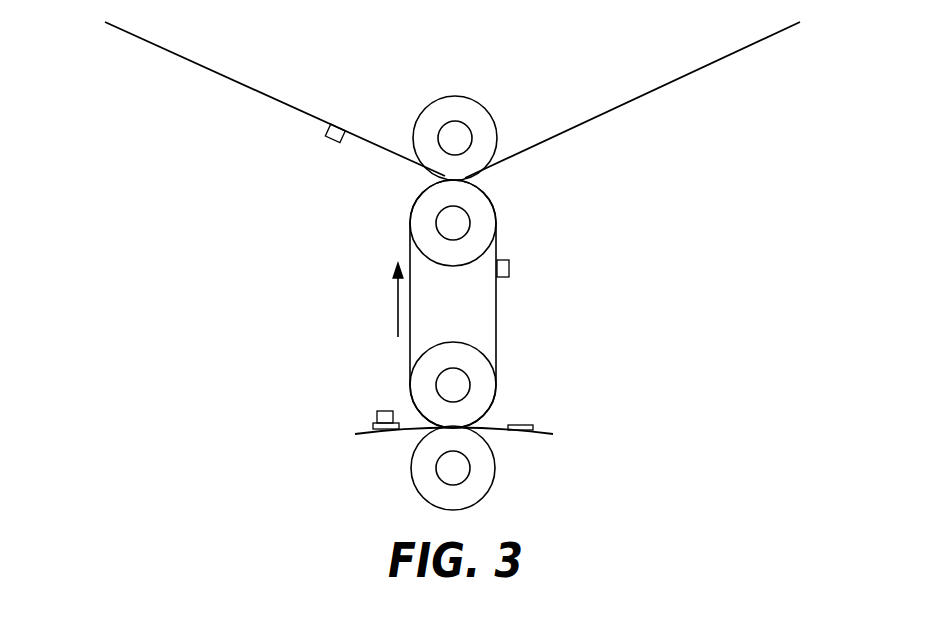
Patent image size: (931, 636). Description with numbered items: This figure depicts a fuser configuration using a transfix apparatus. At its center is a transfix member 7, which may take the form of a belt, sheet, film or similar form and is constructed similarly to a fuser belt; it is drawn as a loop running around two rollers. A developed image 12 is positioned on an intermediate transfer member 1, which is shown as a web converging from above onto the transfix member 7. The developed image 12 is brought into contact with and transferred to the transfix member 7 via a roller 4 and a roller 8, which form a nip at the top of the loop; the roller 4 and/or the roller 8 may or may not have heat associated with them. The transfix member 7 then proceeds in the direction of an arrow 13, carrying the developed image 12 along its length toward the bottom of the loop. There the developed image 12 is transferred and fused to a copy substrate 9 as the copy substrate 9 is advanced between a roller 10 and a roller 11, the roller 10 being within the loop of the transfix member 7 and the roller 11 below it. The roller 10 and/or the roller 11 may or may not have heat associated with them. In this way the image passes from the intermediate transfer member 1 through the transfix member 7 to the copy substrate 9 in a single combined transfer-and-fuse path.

The intermediate transfer member 1 is at (275, 97).
The roller 4 is at (463, 98).
The transfix member 7 is at (497, 327).
The roller 8 is at (483, 213).
The copy substrate 9 is at (520, 423).
The roller 10 is at (487, 375).
The roller 11 is at (497, 468).
The developed image 12 is at (331, 143).
The arrow 13 is at (396, 302).